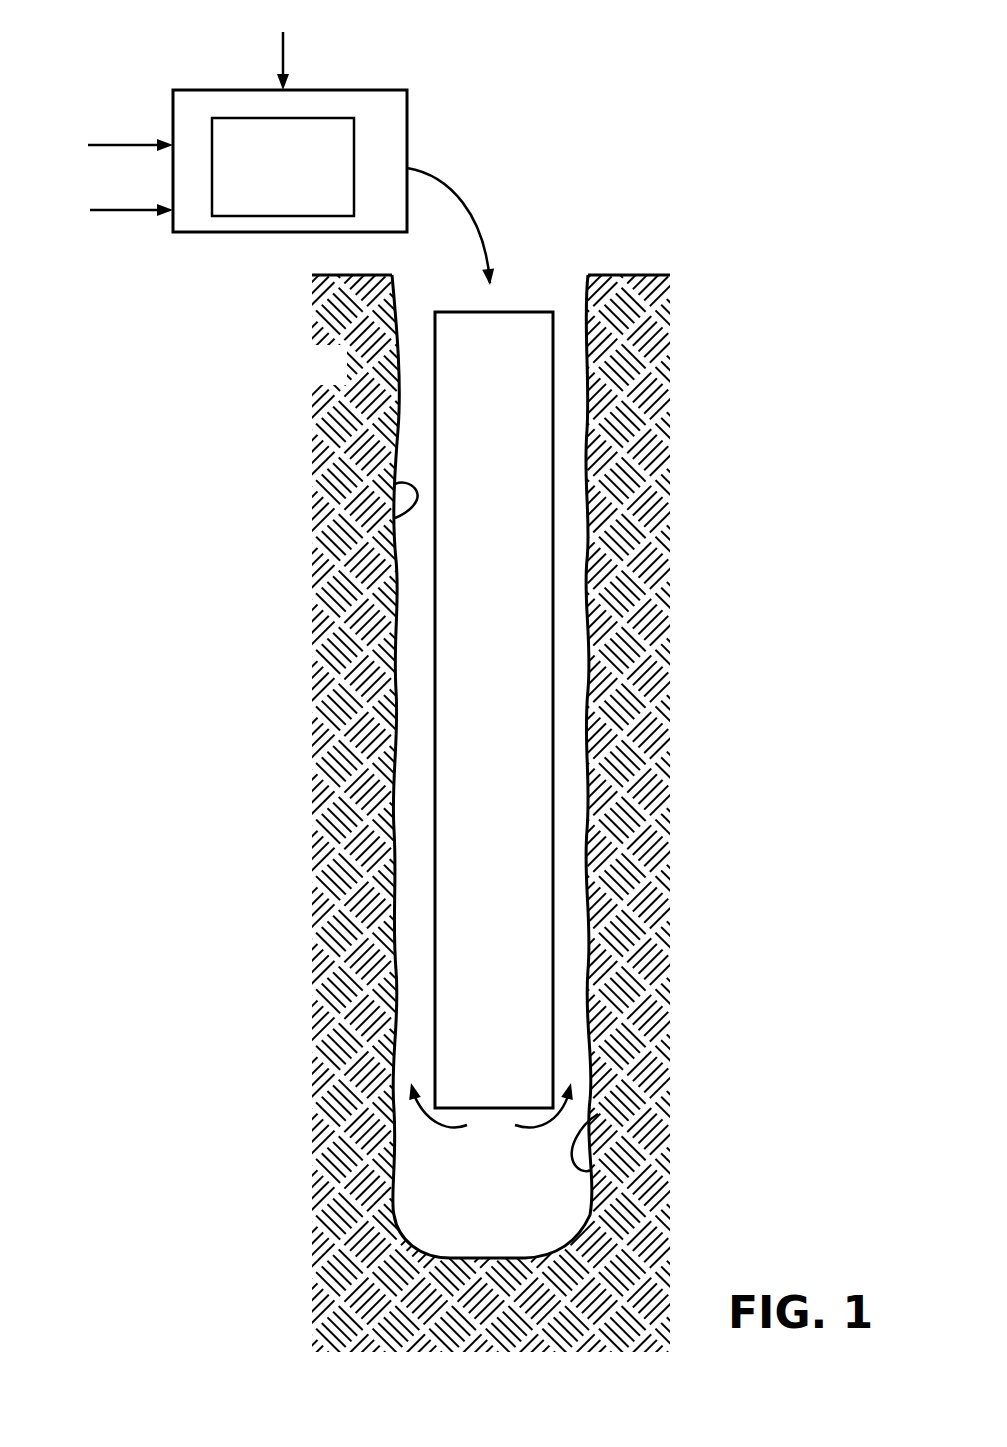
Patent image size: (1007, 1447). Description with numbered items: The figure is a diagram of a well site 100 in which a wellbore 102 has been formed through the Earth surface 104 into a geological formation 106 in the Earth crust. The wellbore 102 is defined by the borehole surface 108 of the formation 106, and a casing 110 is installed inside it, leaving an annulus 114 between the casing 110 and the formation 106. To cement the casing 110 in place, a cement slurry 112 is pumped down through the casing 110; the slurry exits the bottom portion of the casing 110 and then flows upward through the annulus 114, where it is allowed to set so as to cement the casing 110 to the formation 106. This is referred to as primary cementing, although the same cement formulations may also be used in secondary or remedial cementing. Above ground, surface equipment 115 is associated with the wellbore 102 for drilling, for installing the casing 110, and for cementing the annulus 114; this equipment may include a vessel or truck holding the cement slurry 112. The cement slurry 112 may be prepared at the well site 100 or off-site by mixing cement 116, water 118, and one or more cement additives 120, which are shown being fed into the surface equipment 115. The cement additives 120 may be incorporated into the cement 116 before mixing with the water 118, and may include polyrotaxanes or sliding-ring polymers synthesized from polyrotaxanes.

The well site 100 is at (728, 197).
The wellbore 102 is at (585, 557).
The Earth surface 104 is at (338, 275).
The geological formation 106 is at (342, 378).
The borehole surface 108 is at (395, 518).
The casing 110 is at (553, 697).
The cement slurry 112 is at (307, 118).
The annulus 114 is at (412, 738).
The surface equipment 115 is at (370, 92).
The cement 116 is at (130, 143).
The water 118 is at (276, 60).
The cement additive 120 is at (136, 210).